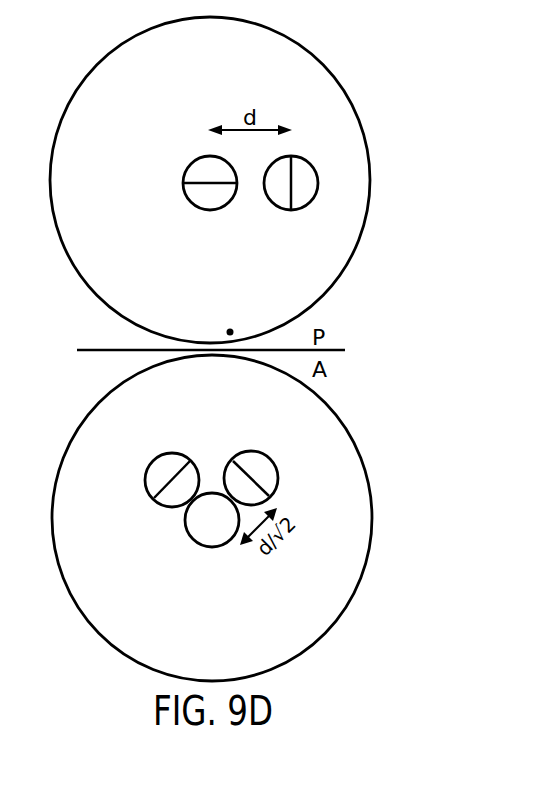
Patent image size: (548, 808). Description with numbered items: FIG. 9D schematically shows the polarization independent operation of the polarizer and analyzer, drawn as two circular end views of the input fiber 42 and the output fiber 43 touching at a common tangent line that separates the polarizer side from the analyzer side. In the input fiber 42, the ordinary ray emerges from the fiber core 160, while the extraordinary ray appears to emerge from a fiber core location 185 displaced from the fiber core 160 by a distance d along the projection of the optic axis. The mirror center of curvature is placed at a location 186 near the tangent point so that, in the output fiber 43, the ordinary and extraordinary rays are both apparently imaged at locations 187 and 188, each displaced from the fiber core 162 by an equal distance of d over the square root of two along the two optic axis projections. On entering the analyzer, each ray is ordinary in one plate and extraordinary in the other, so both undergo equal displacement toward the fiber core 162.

The input fiber 42 is at (295, 40).
The output fiber 43 is at (338, 415).
The fiber core 160 is at (183, 172).
The fiber core location 185 is at (270, 200).
The mirror center of curvature location 186 is at (230, 332).
The imaged ray location 187 is at (258, 448).
The imaged ray location 188 is at (177, 450).
The fiber core 162 is at (198, 545).